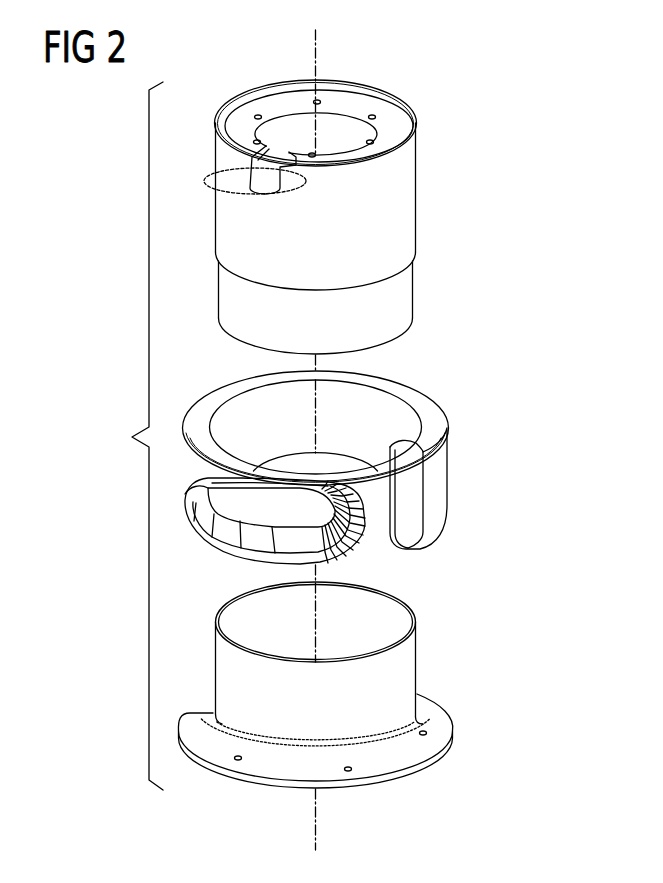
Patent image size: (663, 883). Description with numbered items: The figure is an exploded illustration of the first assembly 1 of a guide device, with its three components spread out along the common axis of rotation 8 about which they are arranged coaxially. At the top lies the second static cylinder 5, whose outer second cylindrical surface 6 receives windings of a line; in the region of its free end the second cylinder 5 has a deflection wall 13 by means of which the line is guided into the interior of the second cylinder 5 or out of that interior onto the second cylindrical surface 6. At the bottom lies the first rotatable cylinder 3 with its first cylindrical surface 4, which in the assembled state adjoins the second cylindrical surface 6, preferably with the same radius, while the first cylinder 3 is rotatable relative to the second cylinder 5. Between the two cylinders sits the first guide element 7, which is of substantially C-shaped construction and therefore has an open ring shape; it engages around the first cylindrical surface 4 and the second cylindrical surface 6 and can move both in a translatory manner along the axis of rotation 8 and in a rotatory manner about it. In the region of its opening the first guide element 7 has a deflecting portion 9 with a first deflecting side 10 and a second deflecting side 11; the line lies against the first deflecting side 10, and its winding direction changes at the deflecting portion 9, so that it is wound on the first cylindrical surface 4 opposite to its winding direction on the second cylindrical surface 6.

The first assembly 1 is at (137, 436).
The first rotatable cylinder 3 is at (323, 720).
The first cylindrical surface 4 is at (407, 677).
The second static cylinder 5 is at (312, 191).
The second cylindrical surface 6 is at (408, 205).
The first guide element 7 is at (344, 454).
The axis of rotation 8 is at (318, 50).
The deflecting portion 9 is at (383, 554).
The first deflecting side 10 is at (420, 540).
The second deflecting side 11 is at (397, 503).
The deflection wall 13 is at (305, 178).